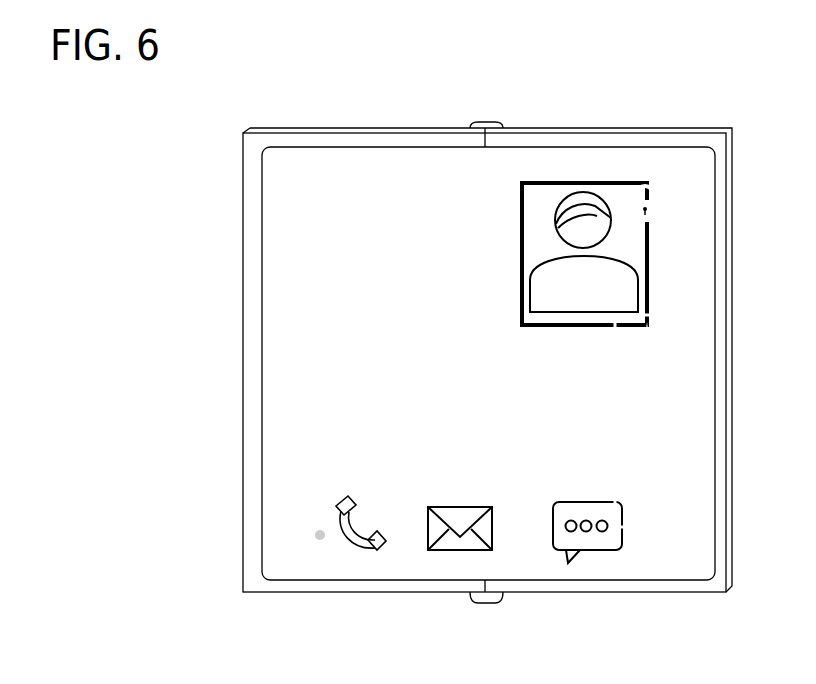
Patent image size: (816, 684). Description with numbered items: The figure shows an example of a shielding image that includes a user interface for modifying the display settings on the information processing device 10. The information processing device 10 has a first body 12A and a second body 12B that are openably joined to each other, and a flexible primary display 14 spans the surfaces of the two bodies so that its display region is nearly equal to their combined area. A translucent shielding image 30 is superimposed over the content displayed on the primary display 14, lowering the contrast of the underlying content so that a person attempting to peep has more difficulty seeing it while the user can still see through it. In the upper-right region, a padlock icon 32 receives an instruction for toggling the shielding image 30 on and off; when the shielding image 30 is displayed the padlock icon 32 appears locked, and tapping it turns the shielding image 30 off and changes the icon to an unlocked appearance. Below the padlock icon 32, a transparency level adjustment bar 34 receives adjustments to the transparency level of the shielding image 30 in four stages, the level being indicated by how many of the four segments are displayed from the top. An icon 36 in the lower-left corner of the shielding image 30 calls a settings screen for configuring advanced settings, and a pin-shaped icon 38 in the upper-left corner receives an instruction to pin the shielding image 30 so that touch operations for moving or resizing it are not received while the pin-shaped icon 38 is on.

The information processing device 10 is at (489, 118).
The first body 12A is at (338, 132).
The second body 12B is at (630, 132).
The primary display 14 is at (393, 155).
The shielding image 30 is at (448, 193).
The padlock icon 32 is at (662, 211).
The transparency level adjustment bar 34 is at (668, 380).
The settings icon 36 is at (322, 555).
The pin-shaped icon 38 is at (280, 192).